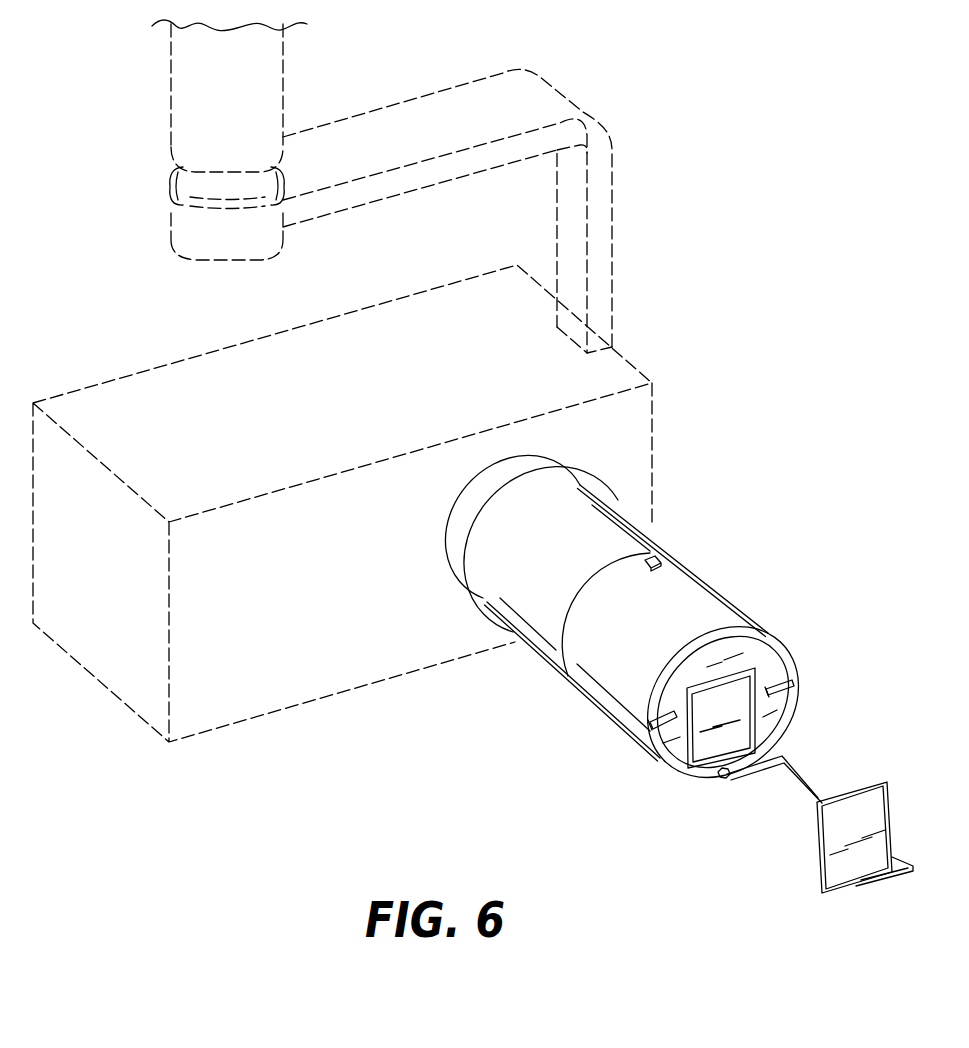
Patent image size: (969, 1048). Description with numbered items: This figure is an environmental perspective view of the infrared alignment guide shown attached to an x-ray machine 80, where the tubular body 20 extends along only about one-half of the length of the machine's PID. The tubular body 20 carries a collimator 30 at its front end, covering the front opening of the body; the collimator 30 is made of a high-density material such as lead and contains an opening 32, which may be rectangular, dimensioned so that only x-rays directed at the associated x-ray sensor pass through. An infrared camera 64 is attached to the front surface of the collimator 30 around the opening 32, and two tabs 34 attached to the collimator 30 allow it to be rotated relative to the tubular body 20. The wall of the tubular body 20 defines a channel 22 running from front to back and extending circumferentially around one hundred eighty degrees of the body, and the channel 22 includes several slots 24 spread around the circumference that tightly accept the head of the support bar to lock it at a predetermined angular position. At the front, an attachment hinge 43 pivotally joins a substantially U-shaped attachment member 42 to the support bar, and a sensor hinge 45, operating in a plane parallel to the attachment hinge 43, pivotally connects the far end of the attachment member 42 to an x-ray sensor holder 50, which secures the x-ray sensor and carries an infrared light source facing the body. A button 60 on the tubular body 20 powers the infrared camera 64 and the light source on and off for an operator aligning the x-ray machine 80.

The x-ray machine 80 is at (640, 370).
The tubular body 20 is at (727, 597).
The button 60 is at (658, 555).
The collimator 30 is at (781, 640).
The opening 32 is at (721, 710).
The tabs 34 is at (645, 726).
The slots 24 is at (800, 682).
The infrared camera 64 is at (668, 763).
The channel 22 is at (698, 780).
The attachment hinge 43 is at (725, 777).
The attachment member 42 is at (818, 797).
The x-ray sensor holder 50 is at (817, 855).
The sensor hinge 45 is at (858, 886).